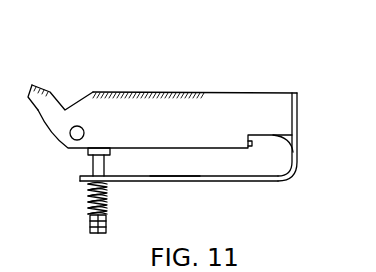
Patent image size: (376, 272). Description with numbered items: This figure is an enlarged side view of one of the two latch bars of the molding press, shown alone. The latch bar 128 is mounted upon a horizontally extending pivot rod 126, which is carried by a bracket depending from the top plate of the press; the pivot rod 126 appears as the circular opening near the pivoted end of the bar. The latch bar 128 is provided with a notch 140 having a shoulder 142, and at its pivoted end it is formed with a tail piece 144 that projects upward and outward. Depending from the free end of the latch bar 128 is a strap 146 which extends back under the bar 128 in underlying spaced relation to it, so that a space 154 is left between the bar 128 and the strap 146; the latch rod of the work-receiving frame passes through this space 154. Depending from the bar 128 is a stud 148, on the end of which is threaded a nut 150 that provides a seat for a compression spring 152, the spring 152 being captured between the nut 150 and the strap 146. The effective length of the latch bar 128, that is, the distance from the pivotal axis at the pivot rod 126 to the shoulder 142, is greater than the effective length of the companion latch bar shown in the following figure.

The latch bar 128 is at (206, 85).
The tail piece 144 is at (44, 86).
The pivot rod 126 is at (71, 141).
The shoulder 142 is at (246, 141).
The notch 140 is at (293, 152).
The strap 146 is at (273, 183).
The space 154 is at (215, 160).
The compression spring 152 is at (109, 197).
The nut 150 is at (90, 222).
The stud 148 is at (95, 235).